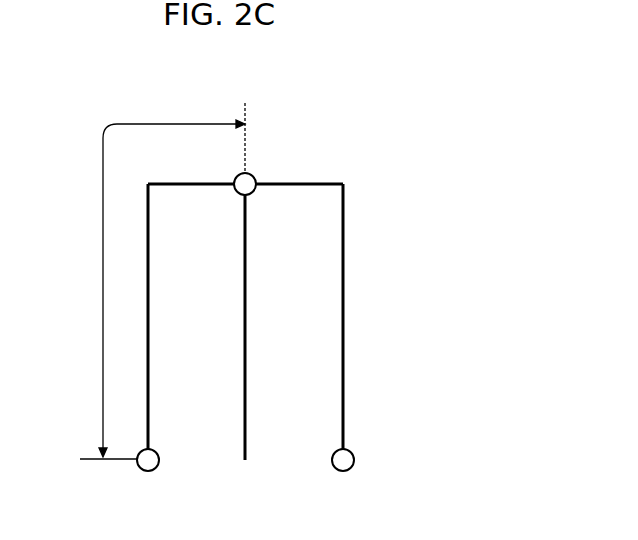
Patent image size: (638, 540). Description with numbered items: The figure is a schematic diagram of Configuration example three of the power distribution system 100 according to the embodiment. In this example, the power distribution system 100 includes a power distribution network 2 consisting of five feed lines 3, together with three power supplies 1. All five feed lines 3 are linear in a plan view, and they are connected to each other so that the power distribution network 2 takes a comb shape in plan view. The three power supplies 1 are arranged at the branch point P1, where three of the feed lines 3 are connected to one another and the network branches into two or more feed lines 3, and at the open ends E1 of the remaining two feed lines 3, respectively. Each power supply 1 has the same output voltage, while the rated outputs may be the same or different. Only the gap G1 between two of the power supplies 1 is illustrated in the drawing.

The power distribution system 100 is at (287, 307).
The power supply 1 is at (252, 177).
The power distribution network 2 is at (269, 326).
The feed line 3 is at (175, 184).
The branch point P1 is at (247, 197).
The open end E1 is at (158, 452).
The gap G1 is at (141, 124).